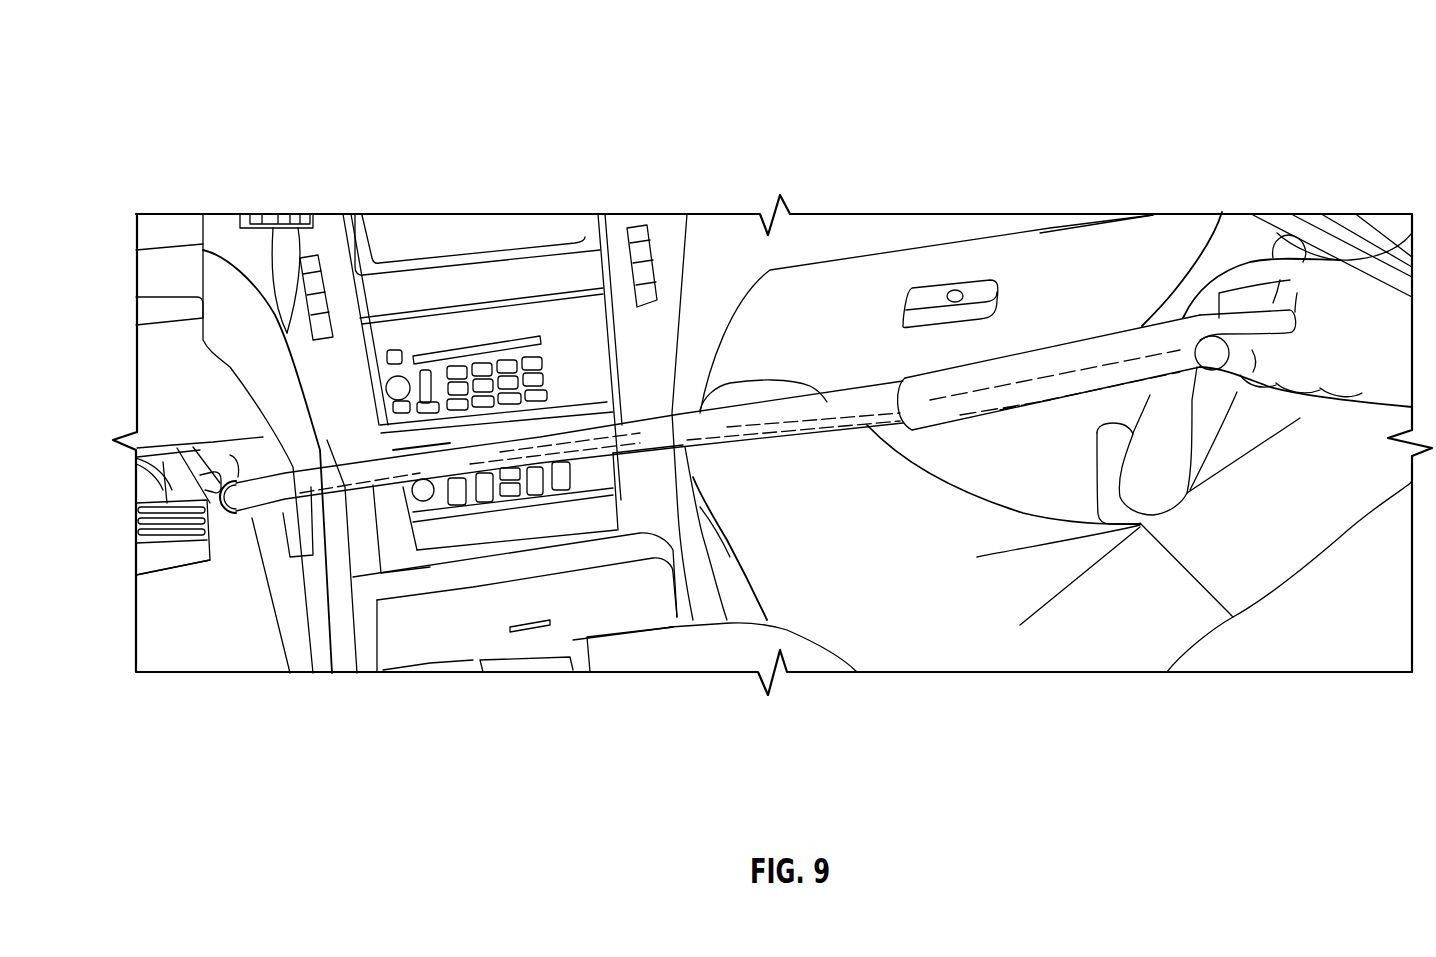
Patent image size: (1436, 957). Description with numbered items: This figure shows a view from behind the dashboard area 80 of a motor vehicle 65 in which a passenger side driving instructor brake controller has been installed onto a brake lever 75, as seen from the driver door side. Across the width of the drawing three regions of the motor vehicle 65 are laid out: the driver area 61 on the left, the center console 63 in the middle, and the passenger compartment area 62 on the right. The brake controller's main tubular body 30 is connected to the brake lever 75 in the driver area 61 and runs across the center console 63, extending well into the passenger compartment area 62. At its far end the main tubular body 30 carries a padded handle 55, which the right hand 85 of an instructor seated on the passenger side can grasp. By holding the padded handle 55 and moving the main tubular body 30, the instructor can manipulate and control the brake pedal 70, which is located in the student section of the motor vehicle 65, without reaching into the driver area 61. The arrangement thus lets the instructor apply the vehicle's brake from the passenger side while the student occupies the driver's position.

The main tubular body 30 is at (537, 447).
The padded handle 55 is at (1070, 373).
The driver area 61 is at (283, 679).
The passenger compartment area 62 is at (1412, 686).
The center console 63 is at (755, 679).
The motor vehicle 65 is at (1127, 104).
The brake pedal 70 is at (163, 615).
The brake lever 75 is at (167, 480).
The dashboard area 80 is at (136, 196).
The right hand 85 is at (1337, 292).